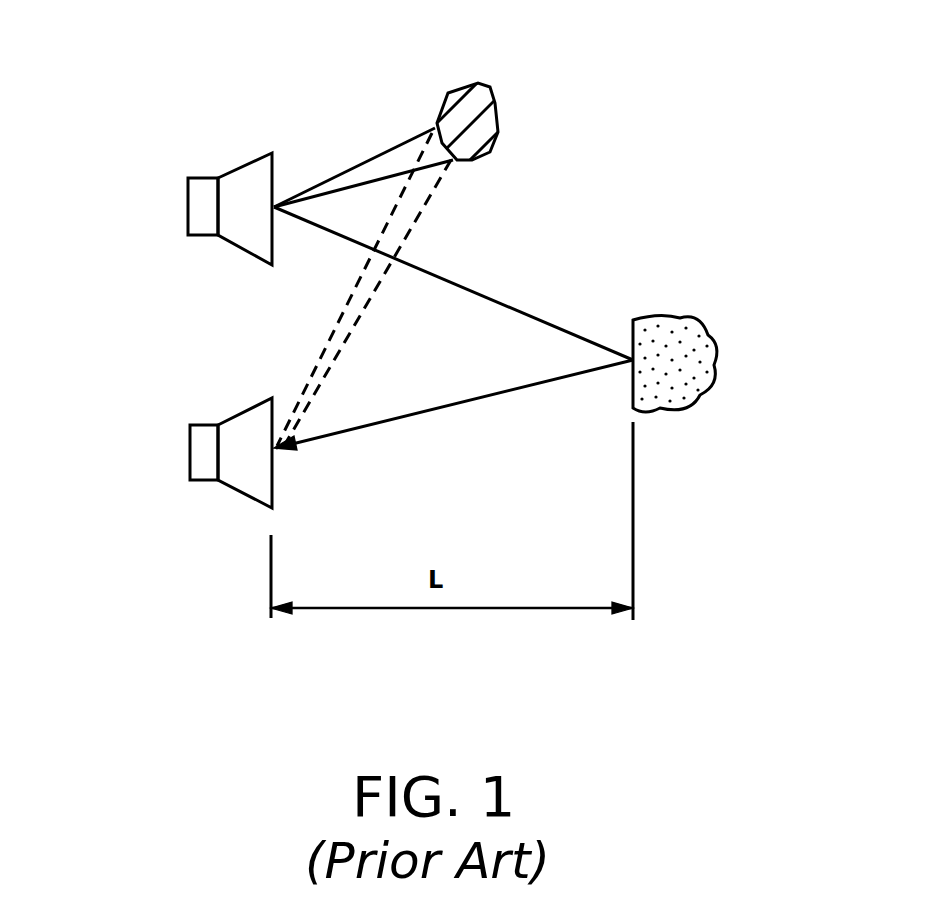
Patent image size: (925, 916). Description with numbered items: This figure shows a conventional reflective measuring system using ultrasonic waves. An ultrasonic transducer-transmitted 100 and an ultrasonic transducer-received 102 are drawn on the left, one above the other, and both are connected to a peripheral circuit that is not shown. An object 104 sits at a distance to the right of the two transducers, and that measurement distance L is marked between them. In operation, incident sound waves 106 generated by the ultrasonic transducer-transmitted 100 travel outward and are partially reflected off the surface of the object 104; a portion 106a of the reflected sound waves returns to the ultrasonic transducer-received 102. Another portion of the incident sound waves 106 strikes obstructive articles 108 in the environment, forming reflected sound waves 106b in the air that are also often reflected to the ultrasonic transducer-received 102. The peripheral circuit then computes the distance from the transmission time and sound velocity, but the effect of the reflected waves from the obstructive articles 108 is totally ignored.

The ultrasonic transducer-transmitted 100 is at (188, 205).
The ultrasonic transducer-received 102 is at (190, 448).
The object 104 is at (718, 360).
The incident sound waves 106 is at (366, 168).
The portion of the reflected sound waves 106a is at (452, 410).
The reflected sound waves 106b is at (400, 210).
The obstructive articles 108 is at (493, 83).